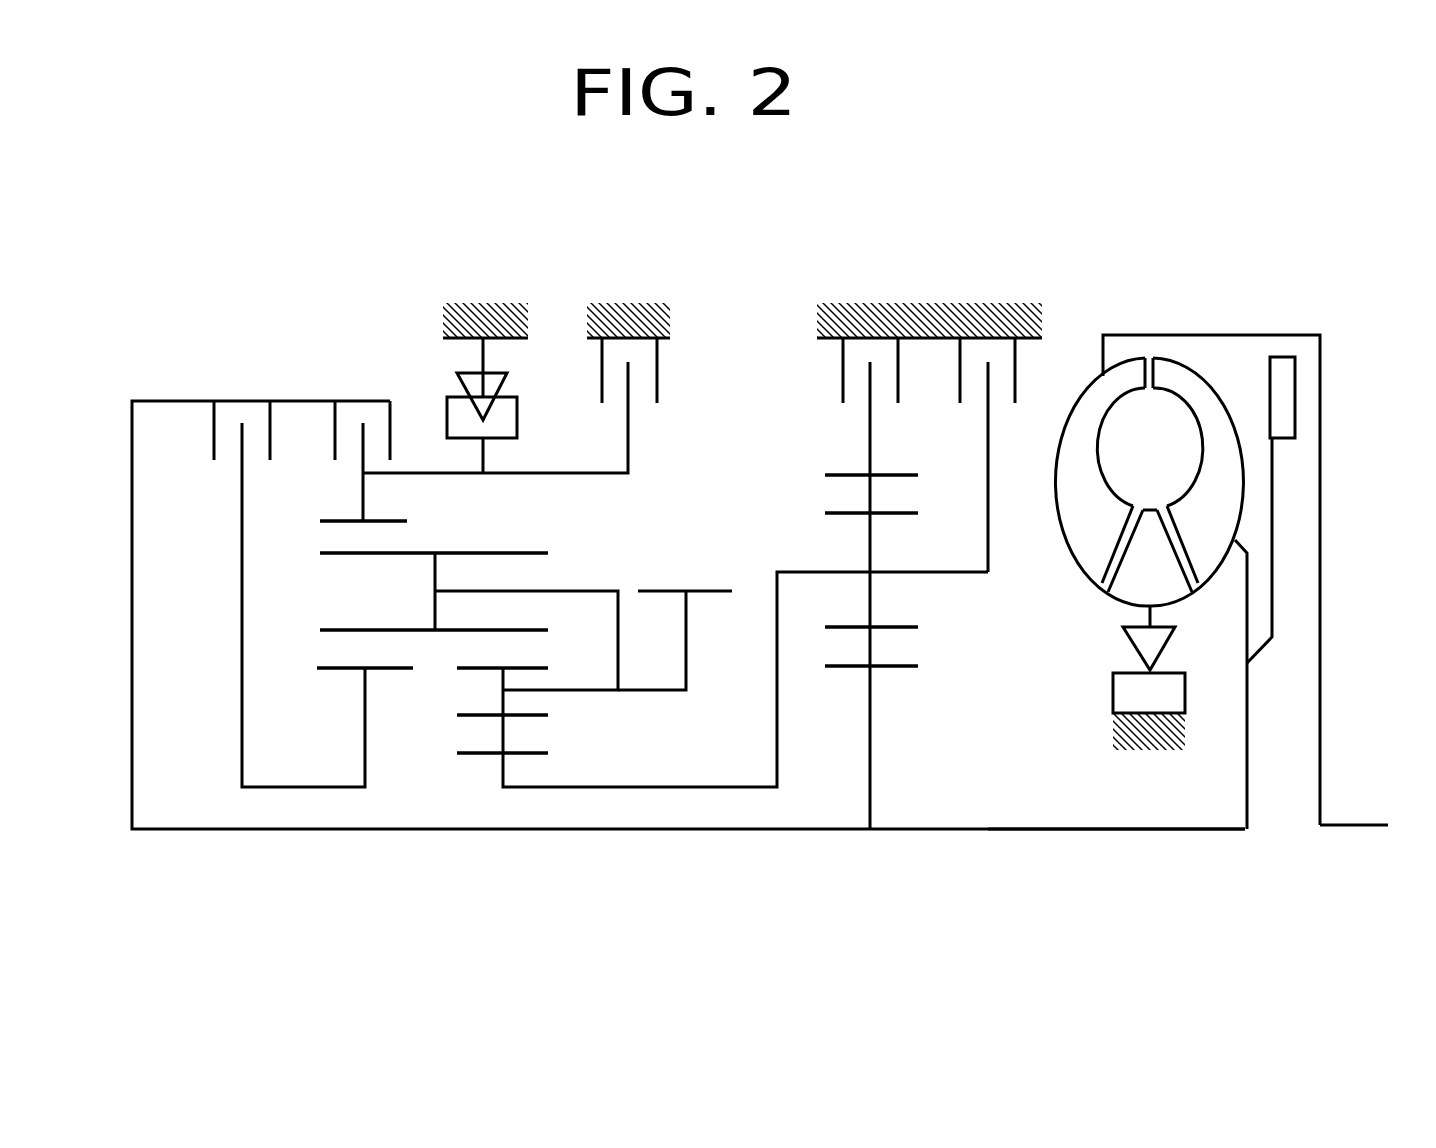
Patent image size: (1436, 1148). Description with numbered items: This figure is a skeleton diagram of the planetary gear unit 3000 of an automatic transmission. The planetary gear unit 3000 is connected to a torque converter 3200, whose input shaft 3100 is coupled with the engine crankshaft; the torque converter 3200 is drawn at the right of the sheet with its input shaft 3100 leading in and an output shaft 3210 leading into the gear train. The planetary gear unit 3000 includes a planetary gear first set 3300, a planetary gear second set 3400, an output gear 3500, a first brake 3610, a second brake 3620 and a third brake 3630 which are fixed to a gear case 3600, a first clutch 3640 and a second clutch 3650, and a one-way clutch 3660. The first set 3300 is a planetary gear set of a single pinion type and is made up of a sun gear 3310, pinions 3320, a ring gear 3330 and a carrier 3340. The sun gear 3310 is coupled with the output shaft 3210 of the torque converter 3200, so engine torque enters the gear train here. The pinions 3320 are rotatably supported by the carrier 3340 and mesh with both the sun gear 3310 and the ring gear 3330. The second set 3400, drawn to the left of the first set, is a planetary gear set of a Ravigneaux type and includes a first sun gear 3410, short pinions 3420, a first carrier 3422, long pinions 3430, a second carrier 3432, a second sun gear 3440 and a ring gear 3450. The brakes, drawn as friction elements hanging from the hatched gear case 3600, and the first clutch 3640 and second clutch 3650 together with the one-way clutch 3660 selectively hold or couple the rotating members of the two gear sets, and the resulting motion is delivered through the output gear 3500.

The planetary gear unit 3000 is at (768, 210).
The input shaft 3100 is at (1345, 828).
The torque converter 3200 is at (1182, 310).
The output shaft 3210 is at (1018, 828).
The planetary gear first set 3300 is at (872, 850).
The sun gear S (UD) 3310 is at (887, 715).
The pinions 3320 is at (905, 620).
The ring gear R (UD) 3330 is at (880, 465).
The carrier C (UD) 3340 is at (988, 535).
The planetary gear second set 3400 is at (507, 850).
The sun gear S (D) 3410 is at (560, 750).
The short pinions 3420 is at (457, 675).
The carrier C (1) 3422 is at (573, 692).
The long pinions 3430 is at (553, 549).
The carrier C (2) 3432 is at (530, 588).
The sun gear S (S) 3440 is at (347, 675).
The ring gear R (1) (R (2)) 3450 is at (400, 507).
The output gear 3500 is at (725, 578).
The gear case 3600 is at (483, 302).
The B1 brake 3610 is at (1000, 380).
The B2 brake 3620 is at (647, 405).
The B3 brake 3630 is at (838, 405).
The C1 clutch 3640 is at (208, 445).
The C2 clutch 3650 is at (328, 445).
The one-way clutch F 3660 is at (445, 385).